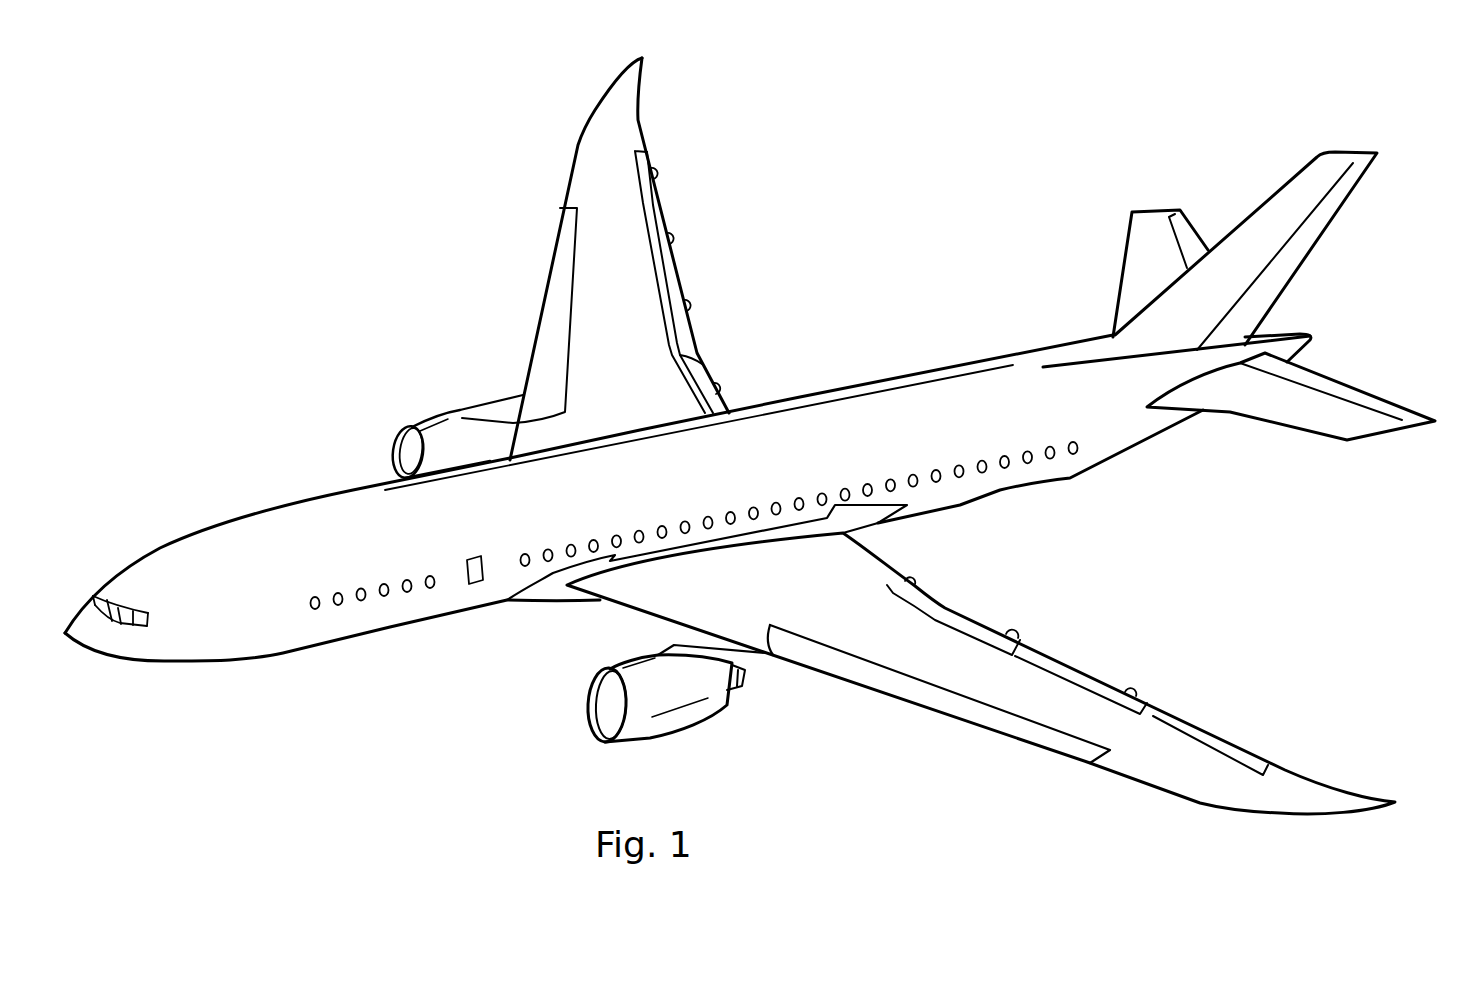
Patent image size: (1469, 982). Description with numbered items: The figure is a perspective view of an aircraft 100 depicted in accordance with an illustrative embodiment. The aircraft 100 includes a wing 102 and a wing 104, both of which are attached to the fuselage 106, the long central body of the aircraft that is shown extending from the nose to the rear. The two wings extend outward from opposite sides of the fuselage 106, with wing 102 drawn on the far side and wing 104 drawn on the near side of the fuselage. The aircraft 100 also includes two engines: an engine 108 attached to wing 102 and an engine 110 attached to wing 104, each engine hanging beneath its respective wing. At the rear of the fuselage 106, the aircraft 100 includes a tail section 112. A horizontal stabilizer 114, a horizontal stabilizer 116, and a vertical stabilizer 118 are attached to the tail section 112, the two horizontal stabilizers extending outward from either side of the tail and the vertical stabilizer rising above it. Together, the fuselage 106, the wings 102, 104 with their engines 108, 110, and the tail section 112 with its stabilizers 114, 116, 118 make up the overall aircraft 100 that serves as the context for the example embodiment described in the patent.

The aircraft 100 is at (340, 209).
The wing 102 is at (639, 93).
The wing 104 is at (1237, 813).
The fuselage 106 is at (248, 514).
The engine 108 is at (437, 408).
The engine 110 is at (677, 735).
The tail section 112 is at (1192, 473).
The horizontal stabilizer 114 is at (1120, 267).
The horizontal stabilizer 116 is at (1295, 432).
The vertical stabilizer 118 is at (1320, 243).